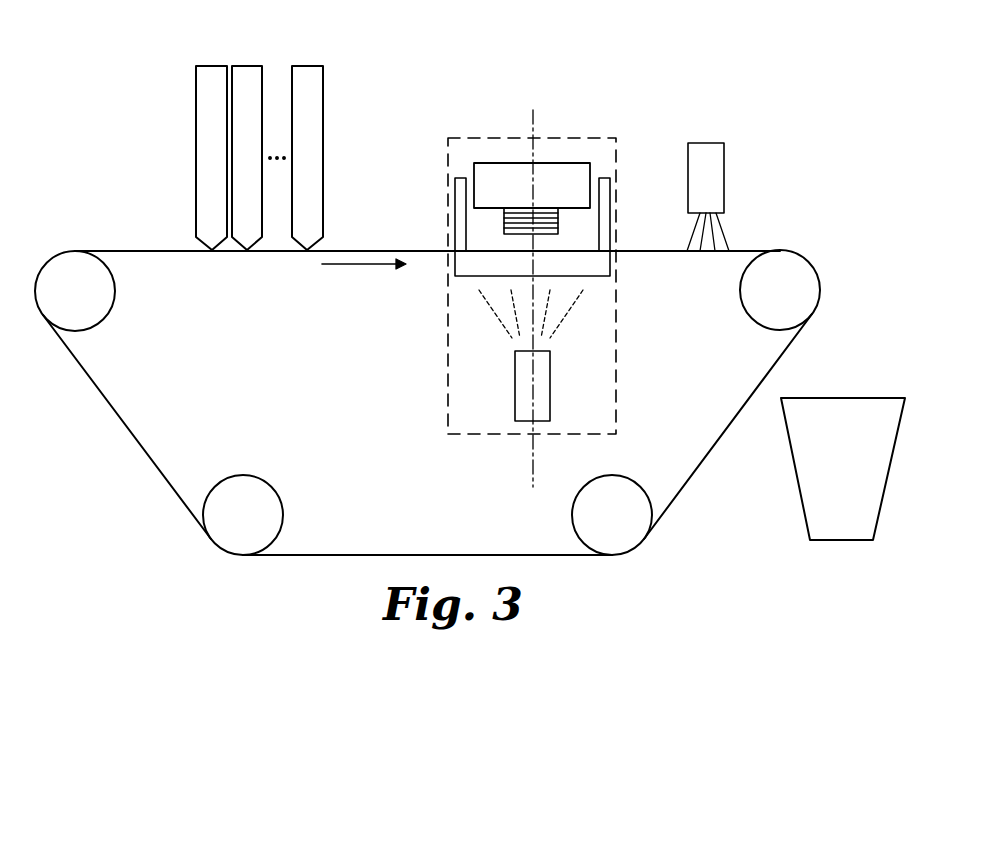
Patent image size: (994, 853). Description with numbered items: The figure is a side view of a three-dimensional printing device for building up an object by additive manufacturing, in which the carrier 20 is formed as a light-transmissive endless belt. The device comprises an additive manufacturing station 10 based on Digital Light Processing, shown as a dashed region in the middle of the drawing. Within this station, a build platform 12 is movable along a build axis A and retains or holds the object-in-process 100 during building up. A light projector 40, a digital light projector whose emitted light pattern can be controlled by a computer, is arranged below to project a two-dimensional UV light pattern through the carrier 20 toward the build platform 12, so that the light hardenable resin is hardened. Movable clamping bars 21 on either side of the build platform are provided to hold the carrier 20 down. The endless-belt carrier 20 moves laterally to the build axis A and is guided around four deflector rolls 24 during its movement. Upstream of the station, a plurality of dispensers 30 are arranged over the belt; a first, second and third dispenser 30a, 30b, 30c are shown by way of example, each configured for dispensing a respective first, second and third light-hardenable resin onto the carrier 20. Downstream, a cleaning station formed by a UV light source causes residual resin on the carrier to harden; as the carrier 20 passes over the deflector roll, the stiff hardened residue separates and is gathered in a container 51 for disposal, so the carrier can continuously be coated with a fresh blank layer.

The additive manufacturing station 10 is at (617, 403).
The build platform 12 is at (561, 172).
The carrier 20 is at (680, 490).
The clamping bars 21 is at (460, 218).
The deflector rolls 24 is at (60, 304).
The dispensers 30 is at (256, 164).
The first dispenser 30a is at (206, 244).
The second dispenser 30b is at (243, 244).
The third dispenser 30c is at (303, 245).
The light projector 40 is at (545, 392).
The container 51 is at (823, 471).
The object-in-process 100 is at (553, 221).
The build axis A is at (533, 478).